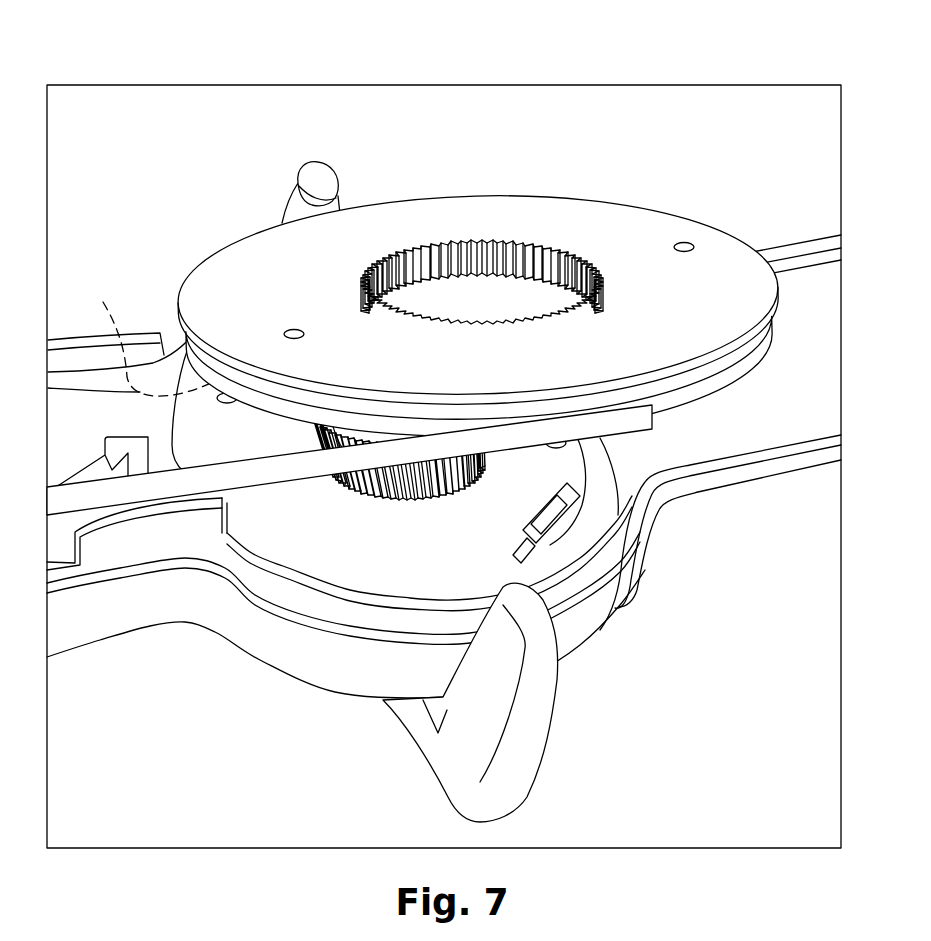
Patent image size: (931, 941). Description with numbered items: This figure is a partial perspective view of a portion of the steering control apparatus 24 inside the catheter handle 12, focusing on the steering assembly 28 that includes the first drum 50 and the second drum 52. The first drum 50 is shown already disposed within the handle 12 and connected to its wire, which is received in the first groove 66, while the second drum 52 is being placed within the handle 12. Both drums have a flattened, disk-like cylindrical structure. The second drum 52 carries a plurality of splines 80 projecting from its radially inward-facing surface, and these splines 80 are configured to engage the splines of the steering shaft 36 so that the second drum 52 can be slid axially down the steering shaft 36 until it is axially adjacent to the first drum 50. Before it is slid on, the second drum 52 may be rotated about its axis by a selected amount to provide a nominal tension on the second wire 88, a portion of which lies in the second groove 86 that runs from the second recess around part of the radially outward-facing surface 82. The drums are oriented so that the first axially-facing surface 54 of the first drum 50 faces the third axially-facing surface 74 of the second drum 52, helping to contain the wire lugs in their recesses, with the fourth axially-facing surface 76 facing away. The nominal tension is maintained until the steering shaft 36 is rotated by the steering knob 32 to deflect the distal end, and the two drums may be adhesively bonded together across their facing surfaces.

The catheter handle 12 is at (329, 706).
The steering control apparatus 24 is at (217, 149).
The steering assembly 28 is at (660, 183).
The steering knob 32 is at (313, 172).
The steering shaft 36 is at (296, 561).
The first drum 50 is at (390, 502).
The second drum 52 is at (206, 254).
The first axially-facing surface 54 is at (378, 572).
The first groove 66 is at (74, 370).
The third axially-facing surface 74 is at (166, 342).
The fourth axially-facing surface 76 is at (262, 255).
The splines 80 is at (408, 277).
The radially outward-facing surface 82 is at (665, 373).
The second groove 86 is at (565, 400).
The second wire 88 is at (90, 514).